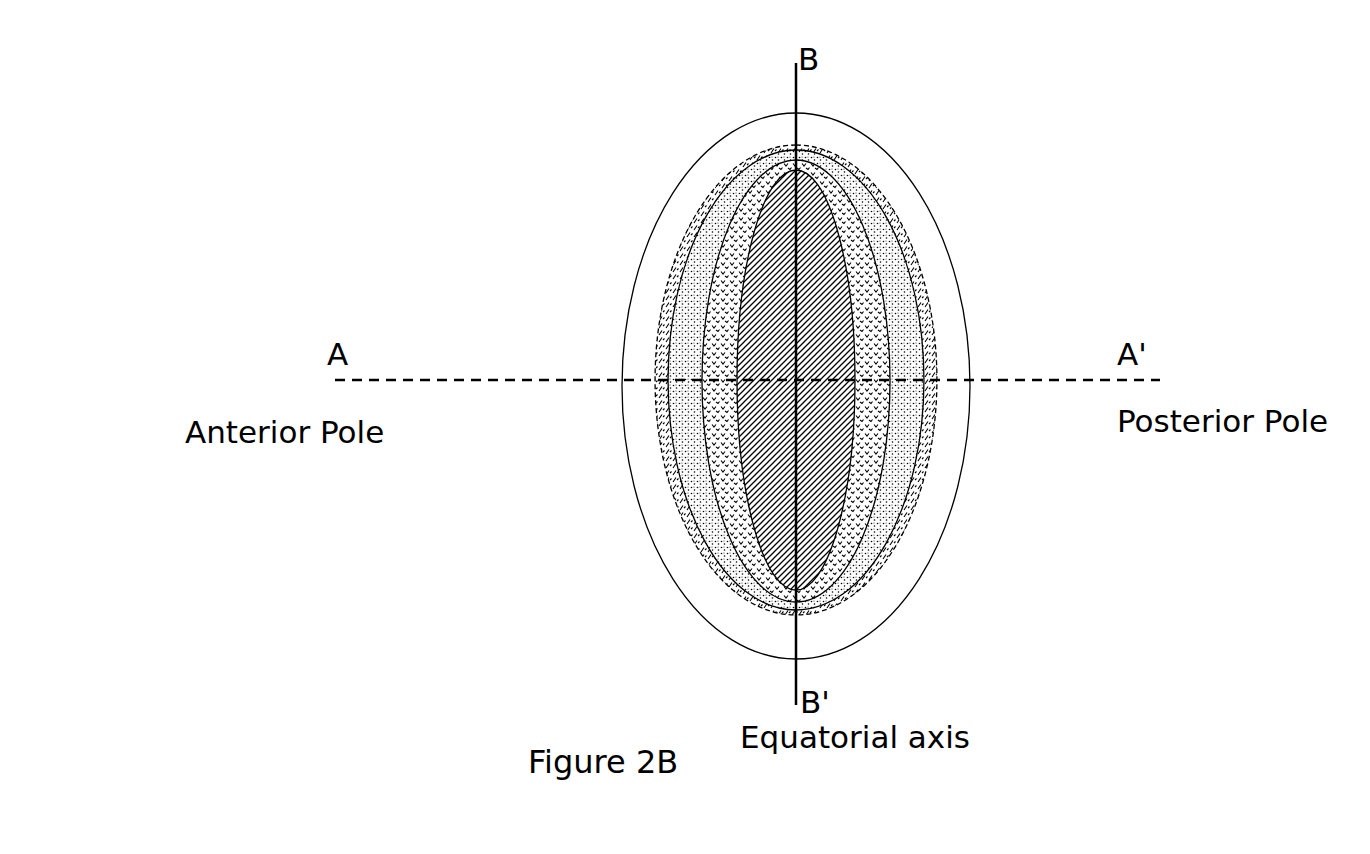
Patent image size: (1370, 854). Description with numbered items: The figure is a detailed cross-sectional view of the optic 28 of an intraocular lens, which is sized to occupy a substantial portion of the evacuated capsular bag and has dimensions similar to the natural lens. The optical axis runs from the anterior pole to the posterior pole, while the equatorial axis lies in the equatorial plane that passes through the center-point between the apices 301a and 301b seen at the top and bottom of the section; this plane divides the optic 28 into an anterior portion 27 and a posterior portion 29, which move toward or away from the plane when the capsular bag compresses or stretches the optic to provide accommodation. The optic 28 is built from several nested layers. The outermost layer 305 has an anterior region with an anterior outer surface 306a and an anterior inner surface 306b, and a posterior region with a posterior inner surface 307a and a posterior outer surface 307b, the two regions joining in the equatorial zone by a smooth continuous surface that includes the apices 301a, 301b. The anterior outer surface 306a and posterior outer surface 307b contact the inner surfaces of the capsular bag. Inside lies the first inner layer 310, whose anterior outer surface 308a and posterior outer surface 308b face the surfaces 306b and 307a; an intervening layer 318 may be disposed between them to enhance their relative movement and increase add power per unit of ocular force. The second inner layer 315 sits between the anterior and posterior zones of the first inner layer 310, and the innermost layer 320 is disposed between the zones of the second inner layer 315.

The anterior portion 27 is at (628, 186).
The optic 28 is at (643, 128).
The posterior portion 29 is at (915, 138).
The apex 301a is at (795, 110).
The apex 301b is at (797, 660).
The outermost layer 305 is at (650, 232).
The anterior outer surface 306a is at (655, 390).
The anterior inner surface 306b is at (660, 462).
The posterior inner surface 307a is at (925, 475).
The posterior outer surface 307b is at (972, 402).
The anterior outer surface of the first inner layer 308a is at (682, 508).
The posterior outer surface of the first inner layer 308b is at (897, 533).
The first inner layer 310 is at (690, 330).
The second inner layer 315 is at (765, 573).
The intervening layer 318 is at (655, 371).
The innermost layer 320 is at (825, 288).